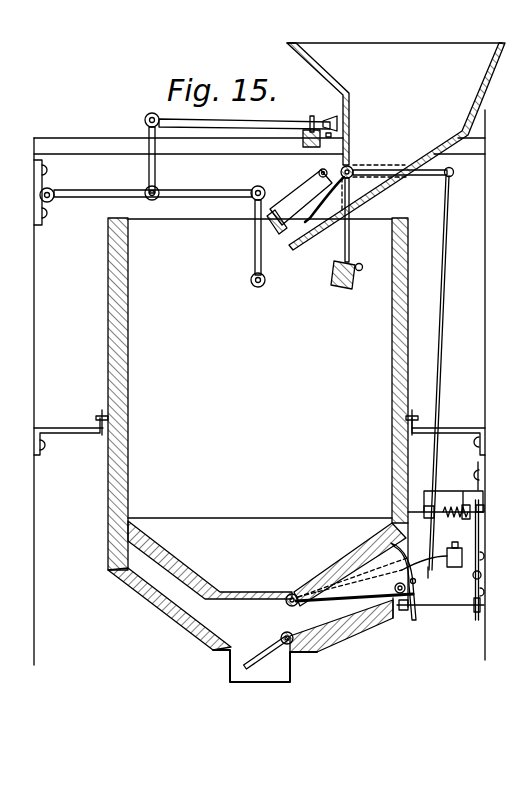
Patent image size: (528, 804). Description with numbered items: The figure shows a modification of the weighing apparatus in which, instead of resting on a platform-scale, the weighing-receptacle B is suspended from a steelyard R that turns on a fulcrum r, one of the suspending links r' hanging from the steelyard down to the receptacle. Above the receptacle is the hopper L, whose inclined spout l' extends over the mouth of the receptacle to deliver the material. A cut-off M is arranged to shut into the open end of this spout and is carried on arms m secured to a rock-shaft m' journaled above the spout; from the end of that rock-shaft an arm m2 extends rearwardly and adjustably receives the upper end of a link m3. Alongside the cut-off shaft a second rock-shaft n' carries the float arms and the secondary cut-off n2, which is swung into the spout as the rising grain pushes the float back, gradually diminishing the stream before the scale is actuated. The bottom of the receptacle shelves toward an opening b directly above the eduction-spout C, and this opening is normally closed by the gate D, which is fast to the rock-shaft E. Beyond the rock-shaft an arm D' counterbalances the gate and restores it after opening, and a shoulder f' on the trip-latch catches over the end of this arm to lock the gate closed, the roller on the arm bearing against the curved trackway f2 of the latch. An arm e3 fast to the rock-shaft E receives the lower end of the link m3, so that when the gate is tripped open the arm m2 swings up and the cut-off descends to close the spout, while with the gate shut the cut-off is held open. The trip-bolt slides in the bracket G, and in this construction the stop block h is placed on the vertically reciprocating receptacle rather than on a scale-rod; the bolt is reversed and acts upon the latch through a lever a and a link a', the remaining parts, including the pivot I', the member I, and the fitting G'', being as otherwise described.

The hopper L is at (396, 146).
The steelyard R is at (241, 125).
The fulcrum r is at (256, 215).
The link r' is at (245, 243).
The arms m is at (301, 197).
The cut-off M is at (277, 238).
The rock-shaft m' is at (314, 166).
The rock-shaft n' is at (355, 165).
The secondary cut-off n2 is at (323, 199).
The spout l' is at (340, 220).
The arm m2 is at (425, 172).
The link m3 is at (444, 210).
The weighing-receptacle B is at (258, 394).
The opening b is at (260, 558).
The eduction-spout C is at (250, 625).
The gate D is at (331, 564).
The rock-shaft E is at (287, 605).
The arm D' is at (354, 588).
The trackway f2 is at (352, 577).
The shoulder f' is at (410, 581).
The pivot I' is at (292, 631).
The lower gate I is at (266, 656).
The block h is at (408, 512).
The bracket G is at (453, 491).
The bolt G'' is at (494, 502).
The lever a is at (490, 560).
The link a' is at (418, 614).
The arm e3 is at (432, 560).